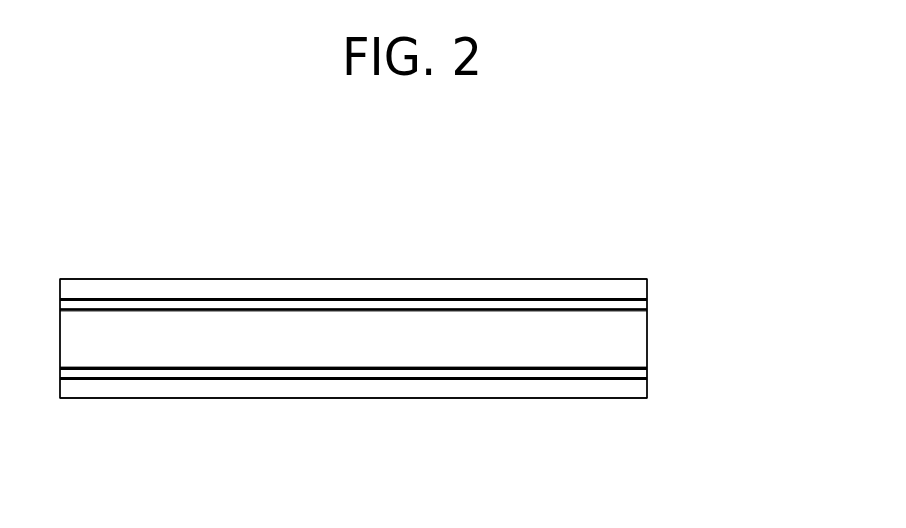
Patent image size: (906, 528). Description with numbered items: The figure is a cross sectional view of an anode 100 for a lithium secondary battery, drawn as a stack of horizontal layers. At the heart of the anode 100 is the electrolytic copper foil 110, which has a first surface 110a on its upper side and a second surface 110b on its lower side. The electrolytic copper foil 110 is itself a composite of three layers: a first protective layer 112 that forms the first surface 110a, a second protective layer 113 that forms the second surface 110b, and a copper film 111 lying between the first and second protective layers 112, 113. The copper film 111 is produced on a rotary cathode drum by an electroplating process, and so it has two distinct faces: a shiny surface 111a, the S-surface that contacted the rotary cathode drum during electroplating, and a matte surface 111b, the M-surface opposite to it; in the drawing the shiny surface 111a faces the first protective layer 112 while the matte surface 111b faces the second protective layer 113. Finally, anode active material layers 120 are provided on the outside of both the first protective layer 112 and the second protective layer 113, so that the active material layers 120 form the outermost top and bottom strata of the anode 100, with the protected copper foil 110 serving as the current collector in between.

The anode 100 is at (398, 172).
The electrolytic copper foil 110 is at (411, 340).
The first surface 110a is at (144, 299).
The second surface 110b is at (143, 382).
The copper film 111 is at (638, 337).
The shiny surface 111a is at (252, 308).
The matte surface 111b is at (252, 371).
The first protective layer 112 is at (638, 303).
The second protective layer 113 is at (638, 374).
The anode active material layer 120 is at (638, 288).